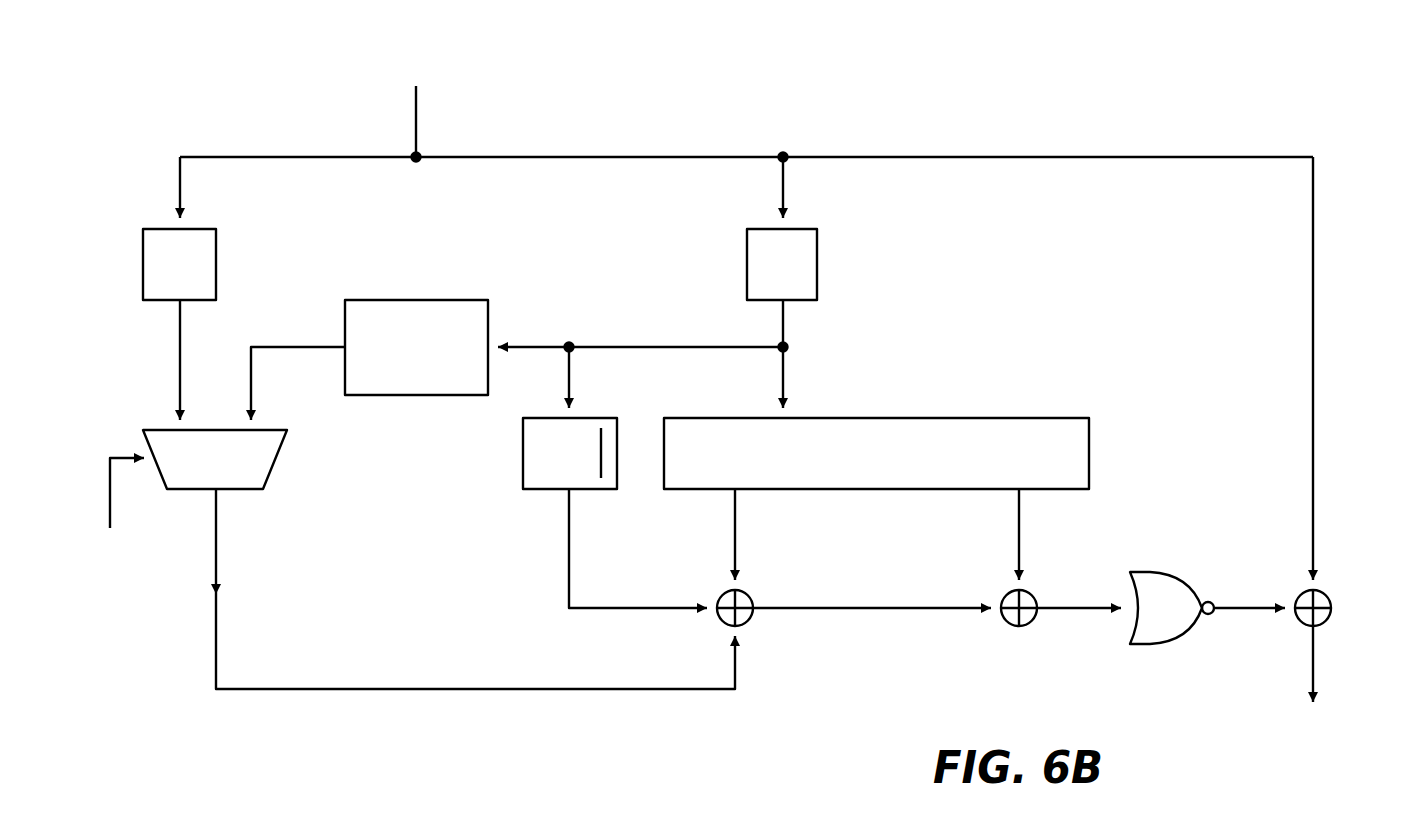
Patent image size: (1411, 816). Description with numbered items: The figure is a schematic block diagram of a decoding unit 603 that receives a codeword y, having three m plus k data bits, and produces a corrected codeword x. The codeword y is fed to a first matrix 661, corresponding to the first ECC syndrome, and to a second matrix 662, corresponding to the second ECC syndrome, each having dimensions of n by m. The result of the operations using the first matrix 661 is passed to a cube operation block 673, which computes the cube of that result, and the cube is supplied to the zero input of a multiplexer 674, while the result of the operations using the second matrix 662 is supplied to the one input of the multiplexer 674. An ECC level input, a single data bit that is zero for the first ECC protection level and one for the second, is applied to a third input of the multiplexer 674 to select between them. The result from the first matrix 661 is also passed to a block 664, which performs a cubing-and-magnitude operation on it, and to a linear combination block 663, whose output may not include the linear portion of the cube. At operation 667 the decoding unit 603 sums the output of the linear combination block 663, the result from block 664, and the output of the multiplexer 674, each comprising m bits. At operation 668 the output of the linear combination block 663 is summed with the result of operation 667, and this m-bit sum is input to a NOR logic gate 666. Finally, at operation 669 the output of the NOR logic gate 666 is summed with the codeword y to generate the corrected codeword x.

The decoding unit 603 is at (143, 90).
The second matrix 662 is at (205, 268).
The first matrix 661 is at (808, 264).
The cube operation block 673 is at (457, 312).
The multiplexer 674 is at (267, 463).
The block 664 is at (541, 477).
The linear combination block 663 is at (1077, 454).
The operation 667 is at (745, 597).
The operation 668 is at (1039, 593).
The NOR logic gate 666 is at (1175, 628).
The operation 669 is at (1333, 595).